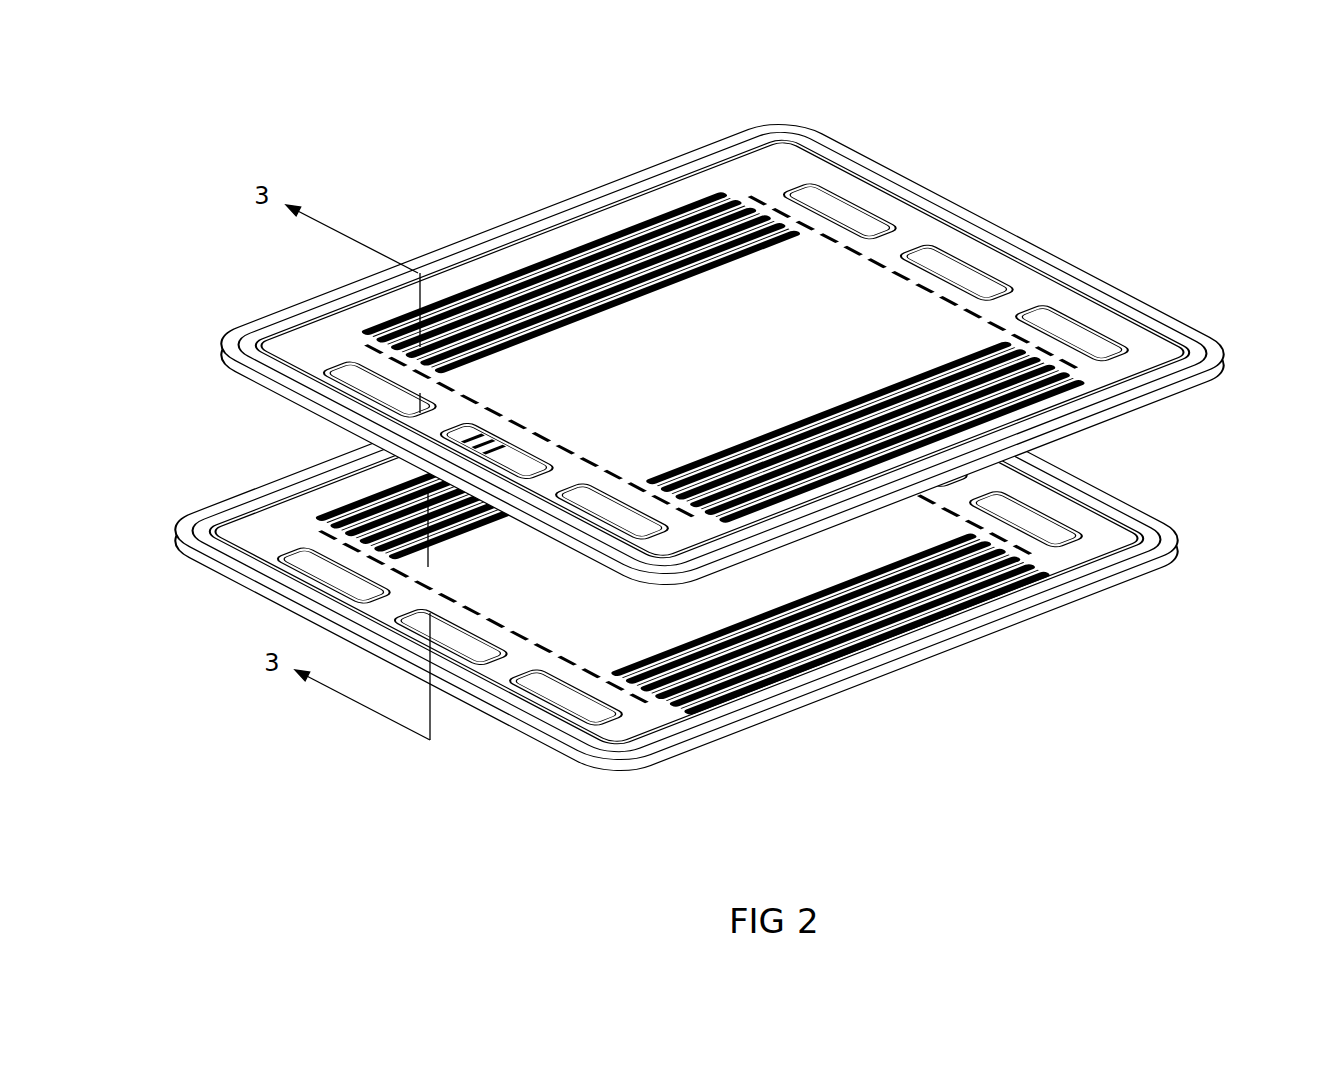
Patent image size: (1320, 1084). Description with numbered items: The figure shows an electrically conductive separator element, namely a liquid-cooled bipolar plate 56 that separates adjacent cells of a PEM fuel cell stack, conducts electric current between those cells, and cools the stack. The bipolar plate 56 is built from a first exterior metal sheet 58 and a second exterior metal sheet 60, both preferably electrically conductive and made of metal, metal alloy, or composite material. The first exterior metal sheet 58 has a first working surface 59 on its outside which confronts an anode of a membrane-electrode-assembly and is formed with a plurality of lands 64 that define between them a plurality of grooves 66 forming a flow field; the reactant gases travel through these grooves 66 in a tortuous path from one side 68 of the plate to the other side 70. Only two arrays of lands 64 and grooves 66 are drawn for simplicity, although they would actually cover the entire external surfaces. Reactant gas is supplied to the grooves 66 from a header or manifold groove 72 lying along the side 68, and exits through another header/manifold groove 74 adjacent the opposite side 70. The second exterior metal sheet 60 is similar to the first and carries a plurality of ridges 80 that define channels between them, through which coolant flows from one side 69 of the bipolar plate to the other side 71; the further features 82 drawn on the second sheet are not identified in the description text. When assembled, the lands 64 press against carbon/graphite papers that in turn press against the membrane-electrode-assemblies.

The bipolar plate 56 is at (705, 453).
The first exterior metal sheet 58 is at (1213, 360).
The first working surface 59 is at (668, 330).
The second exterior metal sheet 60 is at (1147, 570).
The lands 64 is at (532, 300).
The grooves 66 is at (423, 343).
The one side of the bipolar plate 68 is at (895, 175).
The one side of the bipolar plate 69 is at (1137, 523).
The other side of the bipolar plate 70 is at (252, 375).
The other side of the bipolar plate 71 is at (522, 730).
The header or manifold groove 72 is at (822, 220).
The header/manifold groove 74 is at (398, 364).
The ridges 80 is at (697, 685).
The flow channels of lower plate 82 is at (805, 643).